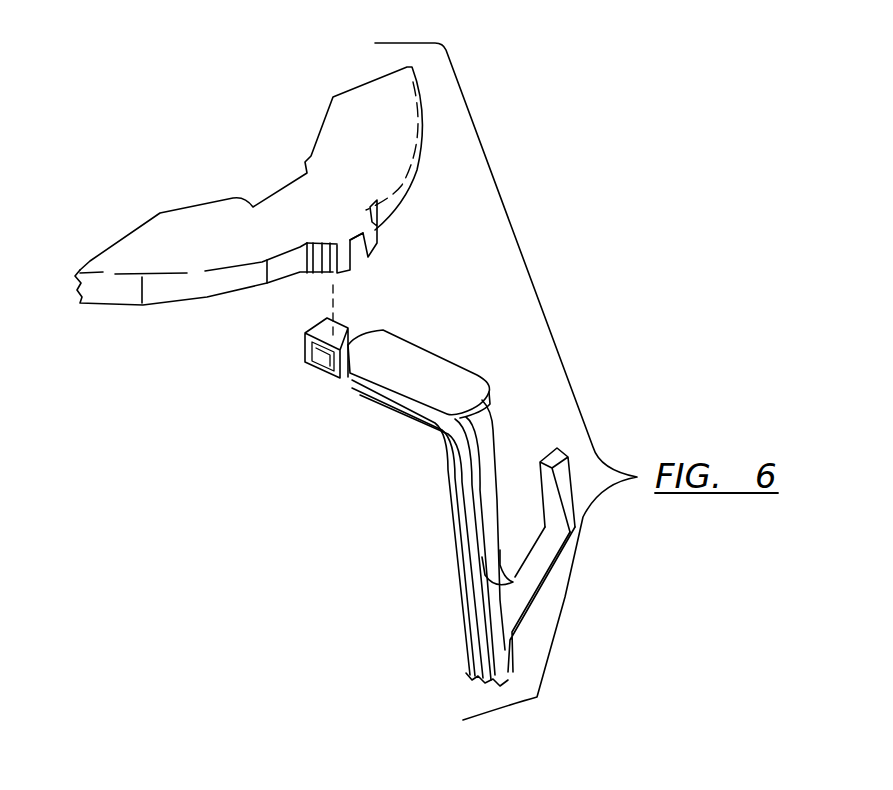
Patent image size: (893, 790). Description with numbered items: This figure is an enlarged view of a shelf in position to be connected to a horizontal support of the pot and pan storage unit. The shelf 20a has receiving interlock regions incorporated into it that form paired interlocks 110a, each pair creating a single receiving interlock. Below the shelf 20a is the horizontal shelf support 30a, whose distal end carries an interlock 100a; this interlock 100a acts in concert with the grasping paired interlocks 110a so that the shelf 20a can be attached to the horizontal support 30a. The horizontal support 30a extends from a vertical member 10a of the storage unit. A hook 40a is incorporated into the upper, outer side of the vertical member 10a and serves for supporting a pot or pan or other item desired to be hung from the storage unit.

The shelf 20a is at (372, 128).
The paired interlocks 110a is at (340, 243).
The interlock 100a is at (317, 360).
The horizontal shelf support 30a is at (433, 375).
The vertical member 10a is at (483, 647).
The hook 40a is at (550, 468).